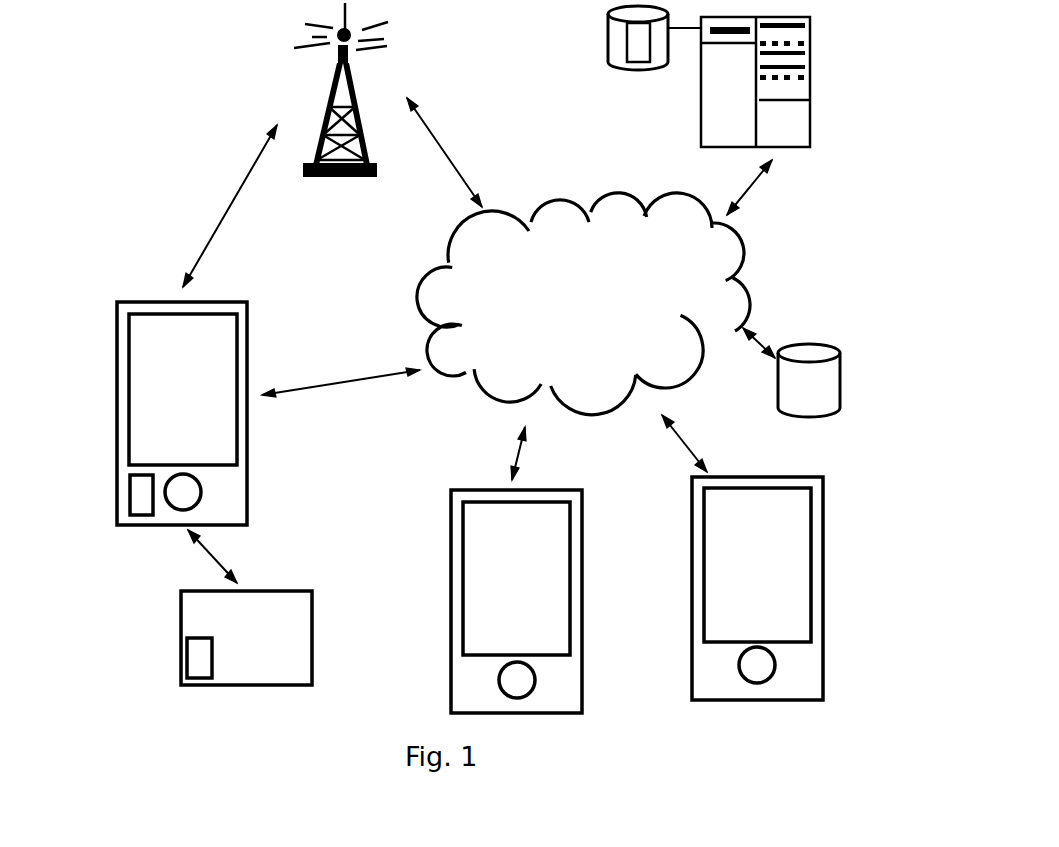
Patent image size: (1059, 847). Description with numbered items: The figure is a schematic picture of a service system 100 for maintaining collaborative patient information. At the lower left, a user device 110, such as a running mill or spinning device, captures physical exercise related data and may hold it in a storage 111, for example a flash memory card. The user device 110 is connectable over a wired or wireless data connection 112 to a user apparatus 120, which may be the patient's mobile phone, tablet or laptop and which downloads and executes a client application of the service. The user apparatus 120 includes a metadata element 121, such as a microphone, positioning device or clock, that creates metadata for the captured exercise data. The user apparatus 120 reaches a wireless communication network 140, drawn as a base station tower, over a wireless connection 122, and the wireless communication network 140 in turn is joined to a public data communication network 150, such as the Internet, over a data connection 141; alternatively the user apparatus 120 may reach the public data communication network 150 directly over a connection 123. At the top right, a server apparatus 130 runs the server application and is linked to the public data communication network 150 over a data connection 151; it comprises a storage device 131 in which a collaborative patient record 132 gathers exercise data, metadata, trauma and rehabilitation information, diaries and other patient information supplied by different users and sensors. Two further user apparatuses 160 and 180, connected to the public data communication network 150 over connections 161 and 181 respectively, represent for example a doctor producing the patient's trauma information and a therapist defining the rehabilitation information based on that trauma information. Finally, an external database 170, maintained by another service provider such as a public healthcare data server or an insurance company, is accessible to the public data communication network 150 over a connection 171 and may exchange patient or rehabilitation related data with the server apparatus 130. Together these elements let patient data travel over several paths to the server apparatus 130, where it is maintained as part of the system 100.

The system 100 is at (203, 125).
The user device 110 is at (312, 603).
The storage 111 is at (200, 658).
The data connection 112 is at (198, 560).
The user apparatus 120 is at (247, 455).
The metadata element 121 is at (140, 495).
The wireless connection 122 is at (213, 232).
The connection 123 is at (327, 382).
The server apparatus 130 is at (701, 115).
The storage device 131 is at (608, 62).
The collaborative patient record 132 is at (626, 24).
The wireless communication network 140 is at (333, 82).
The data connection 141 is at (443, 158).
The public data communication network 150 is at (583, 304).
The data connection 151 is at (750, 187).
The user apparatus 160 is at (451, 655).
The connection 161 is at (517, 455).
The external database 170 is at (805, 420).
The connection 171 is at (757, 343).
The user apparatus 180 is at (692, 532).
The connection 181 is at (680, 438).